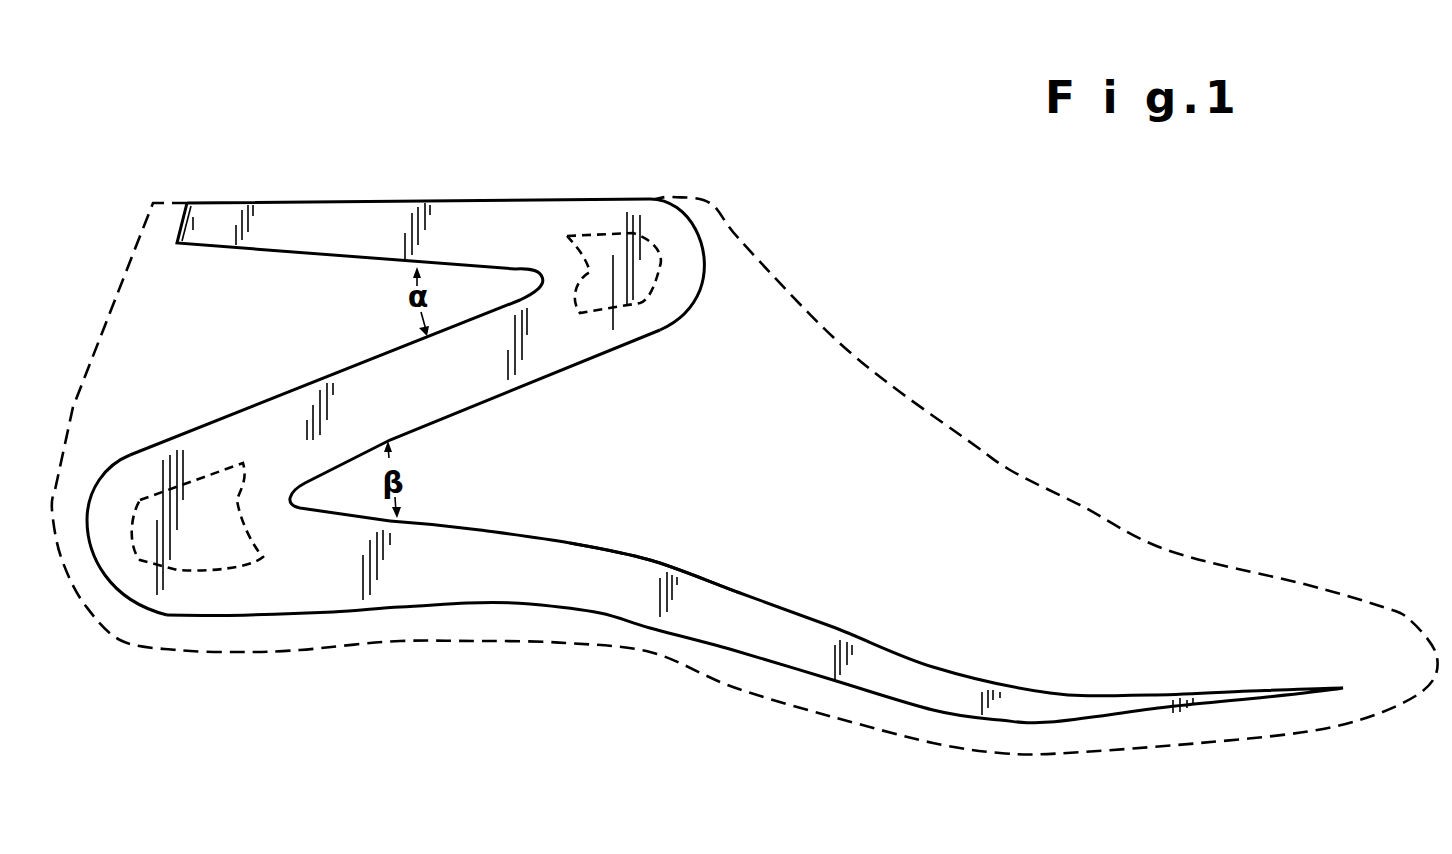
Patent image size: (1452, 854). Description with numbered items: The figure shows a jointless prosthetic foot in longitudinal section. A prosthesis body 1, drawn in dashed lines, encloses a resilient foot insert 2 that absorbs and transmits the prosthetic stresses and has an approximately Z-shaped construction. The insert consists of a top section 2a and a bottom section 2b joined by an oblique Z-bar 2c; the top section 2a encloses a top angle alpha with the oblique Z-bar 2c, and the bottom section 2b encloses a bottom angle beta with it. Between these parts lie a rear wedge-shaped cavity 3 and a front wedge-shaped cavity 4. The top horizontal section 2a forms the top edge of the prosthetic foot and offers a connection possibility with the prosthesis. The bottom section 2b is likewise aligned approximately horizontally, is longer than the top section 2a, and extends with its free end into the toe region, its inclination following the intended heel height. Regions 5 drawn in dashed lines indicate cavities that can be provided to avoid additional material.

The prosthesis body 1 is at (977, 447).
The foot insert 2 is at (715, 415).
The top section 2a is at (355, 220).
The bottom section 2b is at (518, 573).
The oblique Z-bar 2c is at (469, 389).
The rear wedge-shaped cavity 3 is at (275, 325).
The front wedge-shaped cavity 4 is at (527, 468).
The regions 5 is at (620, 313).